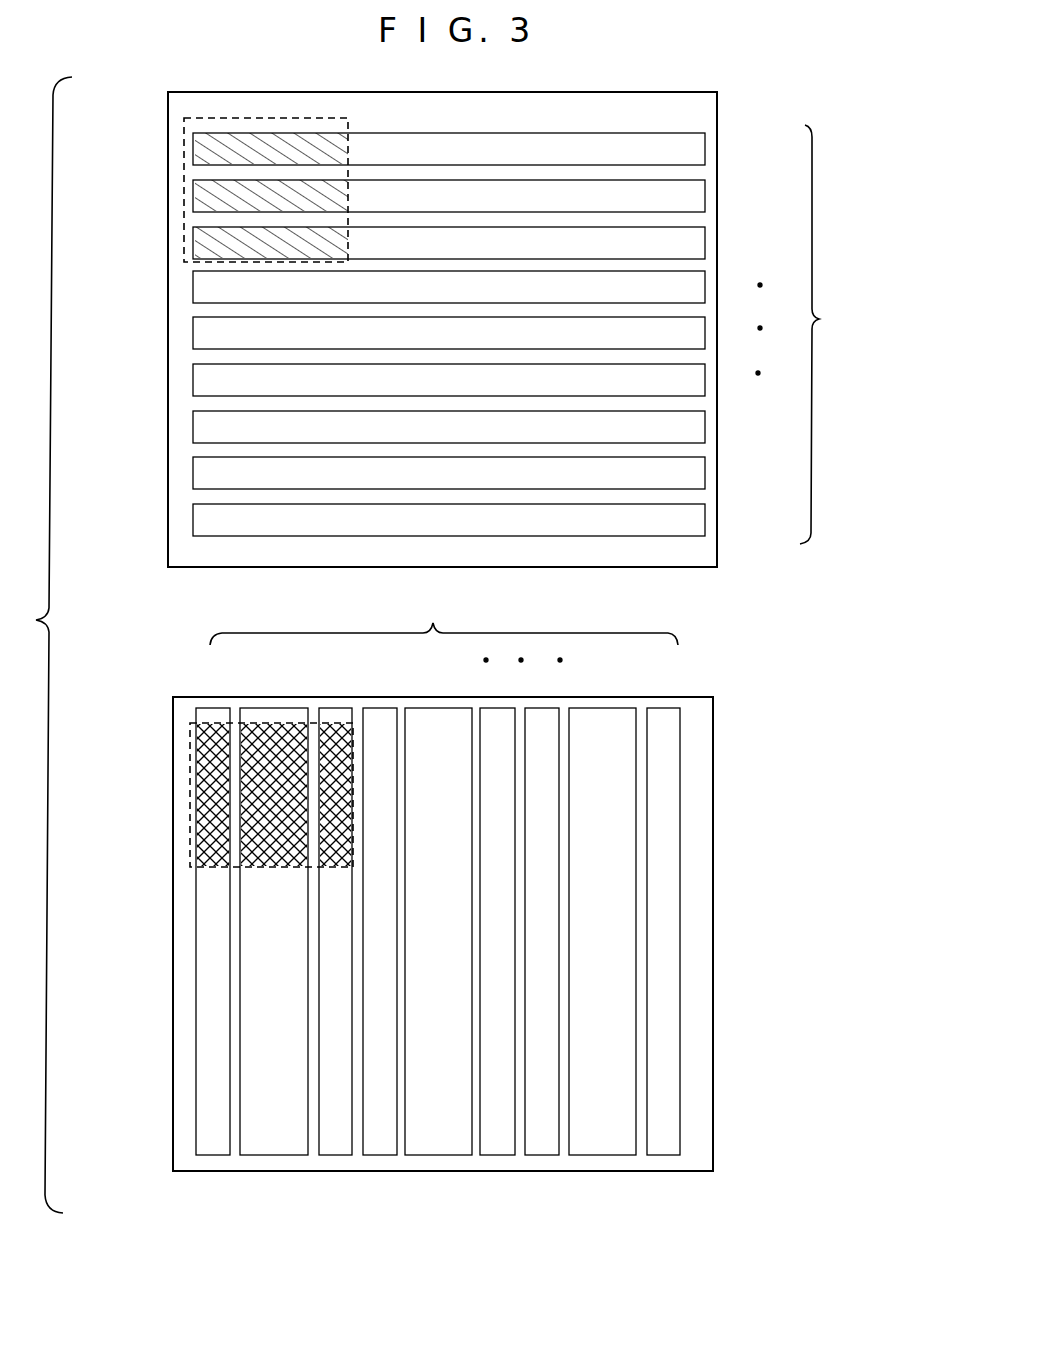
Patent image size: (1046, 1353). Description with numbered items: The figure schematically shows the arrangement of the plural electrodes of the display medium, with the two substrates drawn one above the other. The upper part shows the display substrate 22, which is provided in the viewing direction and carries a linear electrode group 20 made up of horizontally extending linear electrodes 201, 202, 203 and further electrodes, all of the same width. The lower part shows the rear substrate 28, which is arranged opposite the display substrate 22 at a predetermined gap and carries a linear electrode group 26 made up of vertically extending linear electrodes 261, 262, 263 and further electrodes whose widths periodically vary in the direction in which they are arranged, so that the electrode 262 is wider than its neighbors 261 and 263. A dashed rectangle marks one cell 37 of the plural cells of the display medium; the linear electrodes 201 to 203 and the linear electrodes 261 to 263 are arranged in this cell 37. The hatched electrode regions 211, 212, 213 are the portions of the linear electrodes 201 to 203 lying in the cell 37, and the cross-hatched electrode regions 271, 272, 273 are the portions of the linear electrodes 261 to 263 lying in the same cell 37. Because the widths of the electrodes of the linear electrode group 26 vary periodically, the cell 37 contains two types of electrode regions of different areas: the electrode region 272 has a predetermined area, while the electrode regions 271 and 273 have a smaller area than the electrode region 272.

The display substrate 22 is at (688, 92).
The linear electrode group 20 is at (829, 334).
The linear electrode 201 is at (697, 156).
The linear electrode 202 is at (697, 202).
The linear electrode 203 is at (697, 249).
The electrode region 211 is at (333, 143).
The electrode region 212 is at (338, 198).
The electrode region 213 is at (338, 246).
The cell 37 is at (184, 192).
The rear substrate 28 is at (705, 697).
The linear electrode group 26 is at (444, 619).
The linear electrode 261 is at (213, 712).
The linear electrode 262 is at (272, 710).
The linear electrode 263 is at (337, 712).
The electrode region 271 is at (213, 856).
The electrode region 272 is at (270, 858).
The electrode region 273 is at (335, 858).